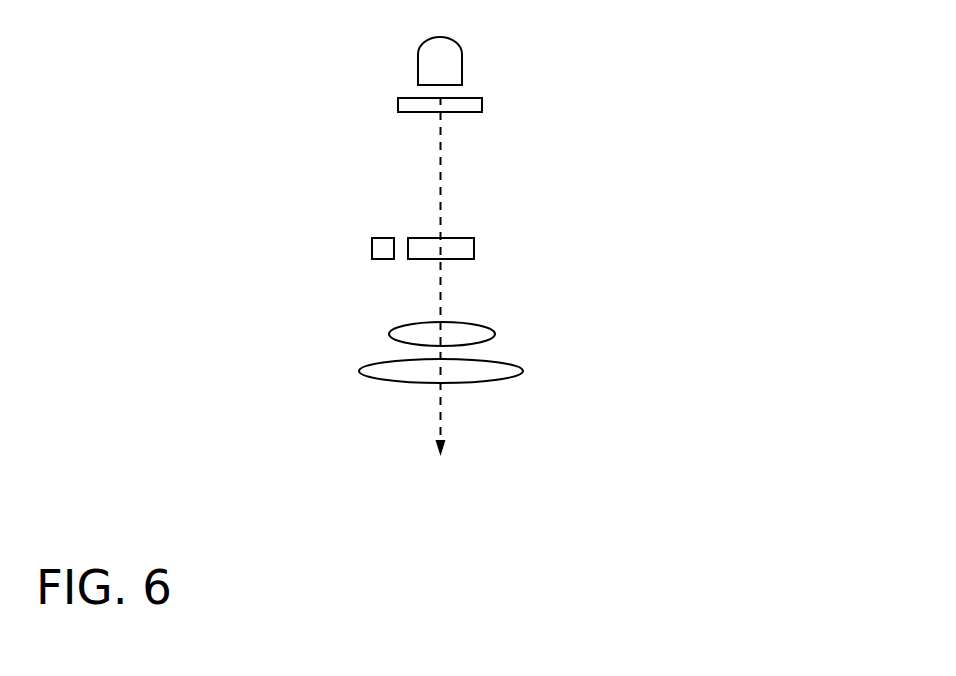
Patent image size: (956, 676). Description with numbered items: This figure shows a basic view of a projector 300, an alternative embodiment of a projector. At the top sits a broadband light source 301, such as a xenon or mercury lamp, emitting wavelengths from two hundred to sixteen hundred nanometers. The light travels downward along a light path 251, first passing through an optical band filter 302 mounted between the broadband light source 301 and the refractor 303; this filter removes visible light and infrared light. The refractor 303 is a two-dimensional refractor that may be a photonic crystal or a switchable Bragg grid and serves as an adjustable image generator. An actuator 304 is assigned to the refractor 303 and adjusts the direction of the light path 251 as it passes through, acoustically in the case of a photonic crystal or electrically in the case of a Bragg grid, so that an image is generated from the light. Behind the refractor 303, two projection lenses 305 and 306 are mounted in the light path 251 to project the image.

The projector 300 is at (742, 211).
The broadband light source 301 is at (435, 66).
The optical band filter 302 is at (399, 106).
The refractor 303 is at (464, 250).
The actuator 304 is at (383, 250).
The projection lens 305 is at (407, 334).
The projection lens 306 is at (388, 372).
The light path 251 is at (441, 419).